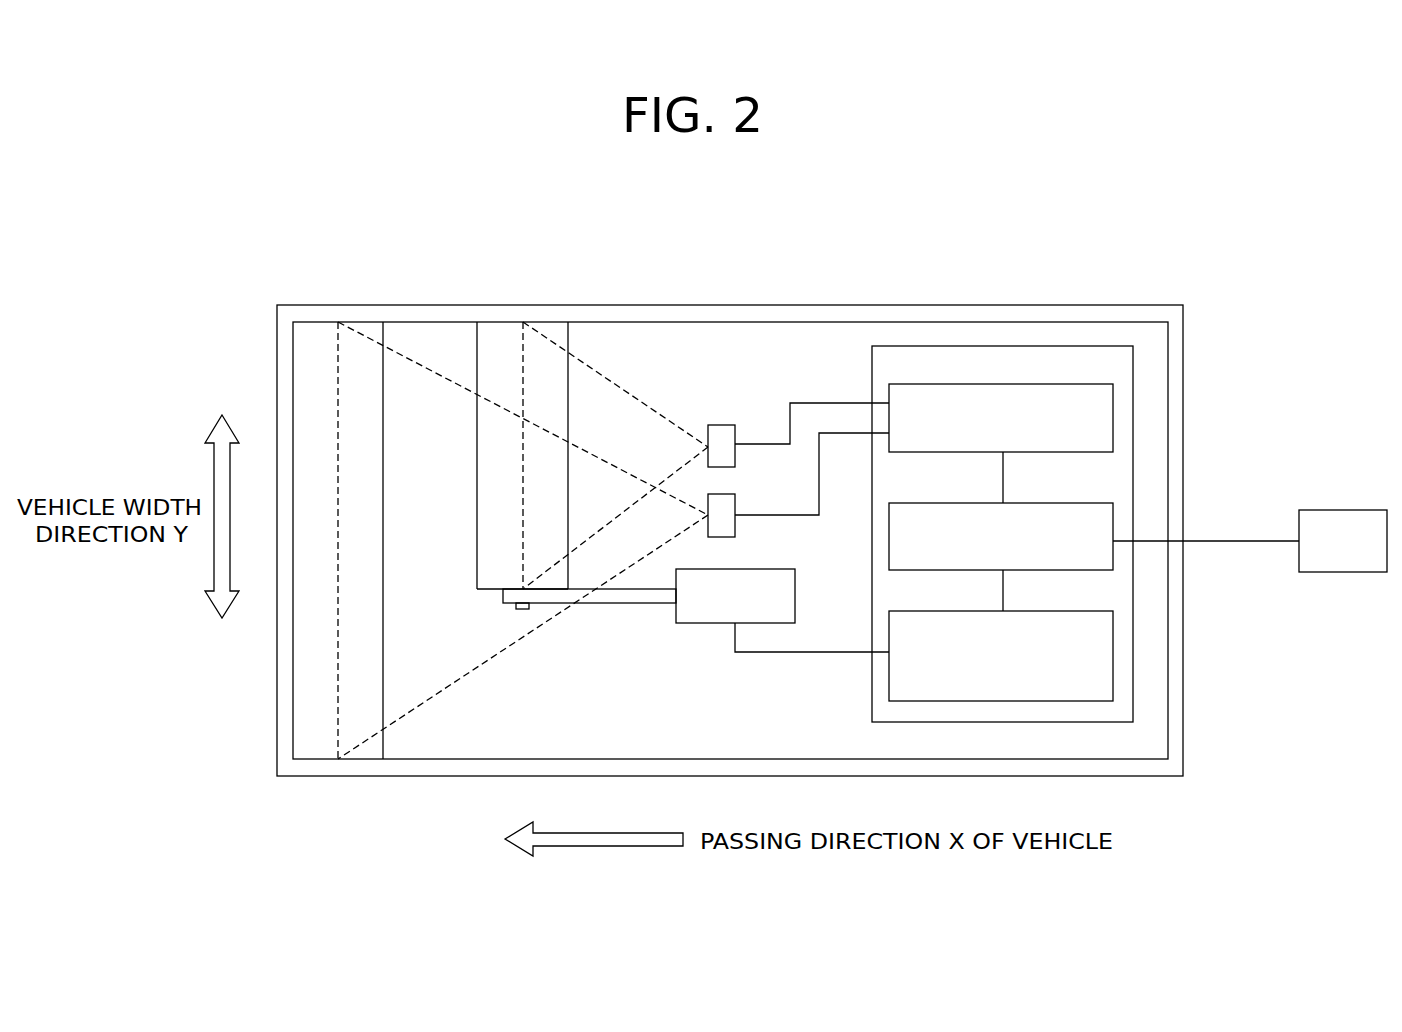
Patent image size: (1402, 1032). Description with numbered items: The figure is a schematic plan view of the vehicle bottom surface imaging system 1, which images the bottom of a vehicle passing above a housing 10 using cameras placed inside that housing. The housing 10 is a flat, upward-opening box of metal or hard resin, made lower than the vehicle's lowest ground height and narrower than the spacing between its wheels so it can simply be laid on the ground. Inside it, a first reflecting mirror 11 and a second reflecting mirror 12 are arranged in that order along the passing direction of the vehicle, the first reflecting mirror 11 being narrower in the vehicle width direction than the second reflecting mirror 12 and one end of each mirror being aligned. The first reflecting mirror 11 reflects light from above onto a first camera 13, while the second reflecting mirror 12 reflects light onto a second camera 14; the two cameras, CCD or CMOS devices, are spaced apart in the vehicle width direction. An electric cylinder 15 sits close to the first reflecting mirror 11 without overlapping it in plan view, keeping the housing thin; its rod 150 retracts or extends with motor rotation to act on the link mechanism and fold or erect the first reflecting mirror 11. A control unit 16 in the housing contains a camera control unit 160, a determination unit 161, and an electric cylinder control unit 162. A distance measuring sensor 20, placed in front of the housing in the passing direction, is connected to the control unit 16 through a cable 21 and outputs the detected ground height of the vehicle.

The vehicle bottom surface imaging system 1 is at (1113, 232).
The housing 10 is at (760, 304).
The first reflecting mirror 11 is at (505, 338).
The second reflecting mirror 12 is at (317, 340).
The first camera 13 is at (735, 455).
The second camera 14 is at (735, 523).
The electric cylinder 15 is at (708, 623).
The rod 150 is at (620, 604).
The control unit 16 is at (1011, 345).
The camera control unit 160 is at (1035, 384).
The determination unit 161 is at (1035, 503).
The electric cylinder control unit 162 is at (1035, 611).
The distance measuring sensor 20 is at (1343, 510).
The cable 21 is at (1248, 540).